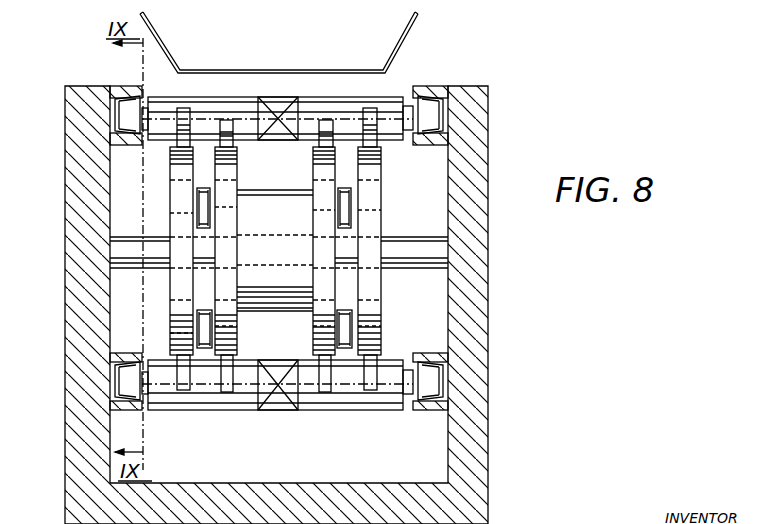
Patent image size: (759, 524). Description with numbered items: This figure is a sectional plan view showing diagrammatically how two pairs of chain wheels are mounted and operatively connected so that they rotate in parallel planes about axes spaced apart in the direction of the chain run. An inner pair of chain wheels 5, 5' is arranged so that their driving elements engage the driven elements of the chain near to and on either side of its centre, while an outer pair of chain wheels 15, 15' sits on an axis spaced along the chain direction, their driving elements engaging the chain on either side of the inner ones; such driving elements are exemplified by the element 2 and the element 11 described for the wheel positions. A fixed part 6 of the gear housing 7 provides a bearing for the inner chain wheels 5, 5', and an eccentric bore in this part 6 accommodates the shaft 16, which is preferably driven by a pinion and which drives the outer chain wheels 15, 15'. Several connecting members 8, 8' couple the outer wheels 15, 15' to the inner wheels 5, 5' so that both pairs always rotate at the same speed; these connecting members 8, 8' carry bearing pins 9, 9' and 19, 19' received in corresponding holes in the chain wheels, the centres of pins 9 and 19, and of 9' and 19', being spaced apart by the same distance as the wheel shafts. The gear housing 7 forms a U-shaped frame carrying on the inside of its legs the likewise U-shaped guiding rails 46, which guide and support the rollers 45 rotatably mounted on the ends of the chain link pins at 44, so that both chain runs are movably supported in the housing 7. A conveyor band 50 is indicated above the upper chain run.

The driving element 2 is at (184, 108).
The inner chain wheel 5 is at (235, 269).
The inner chain wheel 5' is at (308, 269).
The fixed part of gear housing 6 is at (276, 266).
The gear housing 7 is at (483, 160).
The connecting member 8 is at (205, 247).
The connecting member 8' is at (347, 247).
The bearing pin 9 is at (238, 265).
The bearing pin 9' is at (309, 281).
The driving element 11 is at (226, 120).
The outer chain wheel 15 is at (159, 268).
The outer chain wheel 15' is at (392, 268).
The shaft 16 is at (142, 246).
The bearing pin 19 is at (162, 264).
The bearing pin 19' is at (392, 269).
The chain link pin ends 44 is at (286, 102).
The roller 45 is at (130, 115).
The guiding rail 46 is at (128, 88).
The conveyor band 50 is at (408, 38).